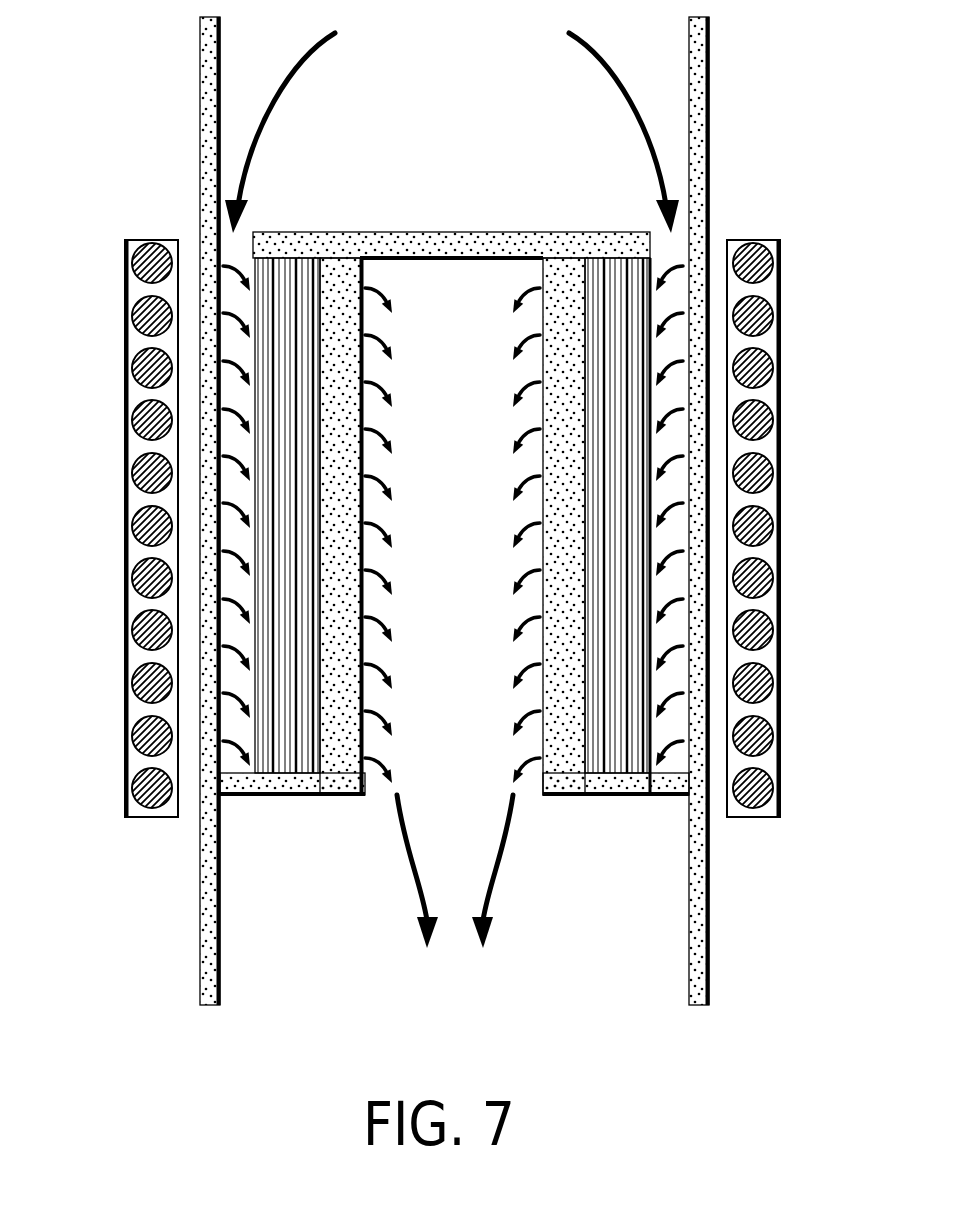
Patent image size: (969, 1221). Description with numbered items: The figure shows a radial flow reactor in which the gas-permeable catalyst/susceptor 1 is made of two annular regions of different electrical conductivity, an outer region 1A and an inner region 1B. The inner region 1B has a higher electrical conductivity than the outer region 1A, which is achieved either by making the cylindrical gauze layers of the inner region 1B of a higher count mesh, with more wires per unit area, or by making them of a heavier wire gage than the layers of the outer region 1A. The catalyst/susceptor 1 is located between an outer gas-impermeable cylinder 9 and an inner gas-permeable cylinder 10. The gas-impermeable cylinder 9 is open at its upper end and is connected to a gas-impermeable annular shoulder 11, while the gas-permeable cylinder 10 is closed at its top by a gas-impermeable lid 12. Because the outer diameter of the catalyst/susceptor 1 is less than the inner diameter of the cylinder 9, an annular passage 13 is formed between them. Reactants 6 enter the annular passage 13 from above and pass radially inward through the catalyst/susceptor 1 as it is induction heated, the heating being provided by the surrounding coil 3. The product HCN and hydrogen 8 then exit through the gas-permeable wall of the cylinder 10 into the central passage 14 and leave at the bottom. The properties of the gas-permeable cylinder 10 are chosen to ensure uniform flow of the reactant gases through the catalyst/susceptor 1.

The catalyst/susceptor 1 is at (632, 640).
The outer region 1A is at (270, 605).
The inner region 1B is at (305, 695).
The induction heating coil 3 is at (777, 312).
The reactants 6 is at (315, 50).
The product HCN and hydrogen 8 is at (483, 935).
The gas-impermeable cylinder 9 is at (708, 112).
The gas-permeable cylinder 10 is at (350, 785).
The gas-impermeable annular shoulder 11 is at (650, 795).
The gas-impermeable lid 12 is at (298, 232).
The annular passage 13 is at (237, 497).
The central passage 14 is at (435, 445).